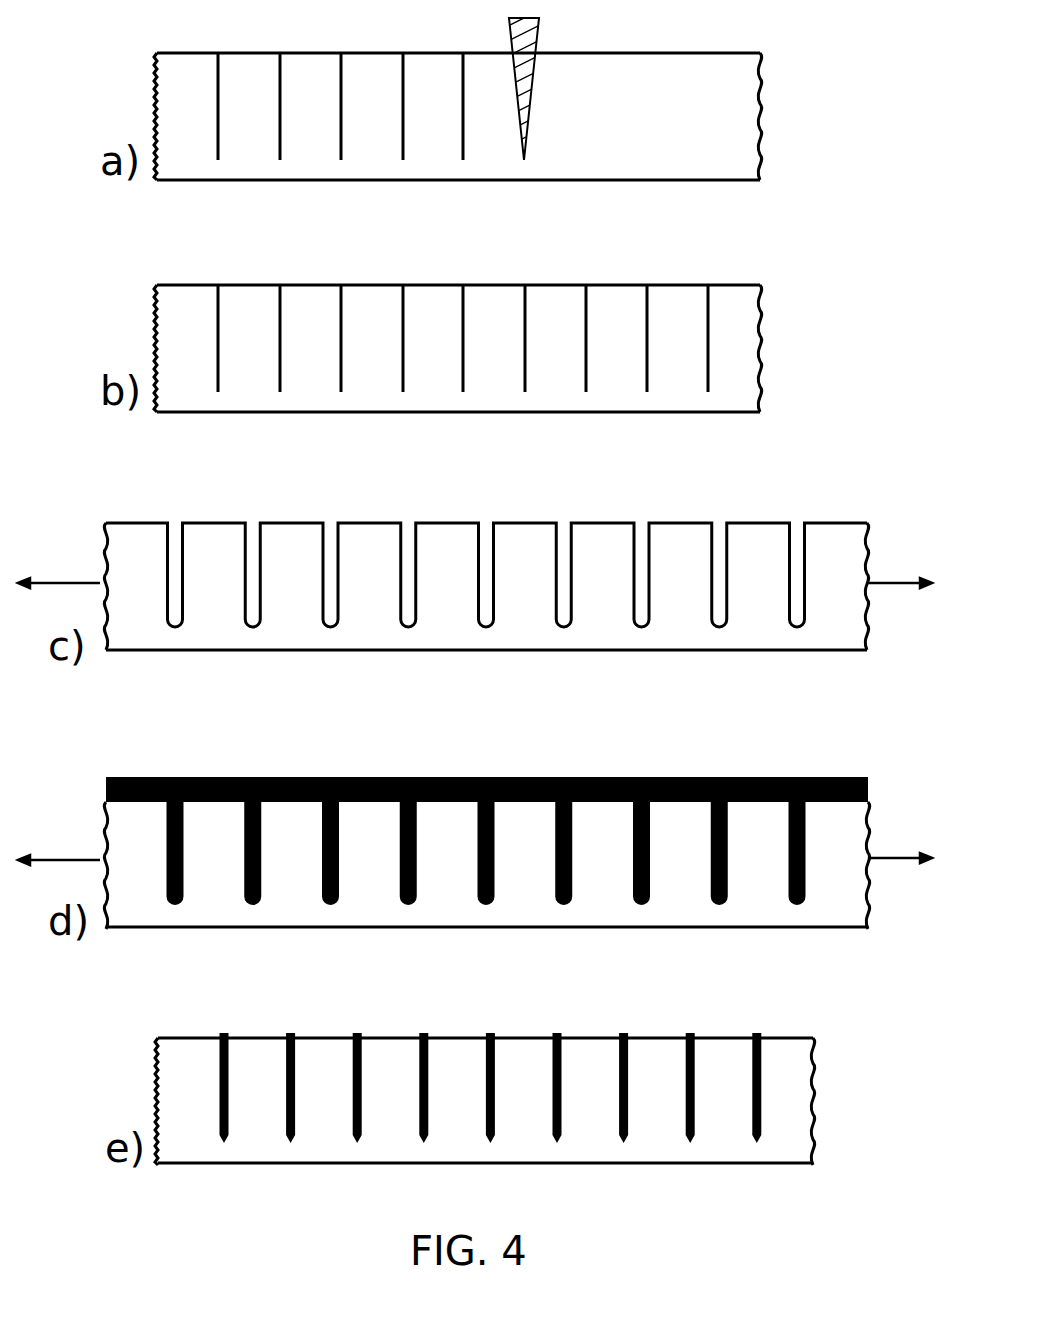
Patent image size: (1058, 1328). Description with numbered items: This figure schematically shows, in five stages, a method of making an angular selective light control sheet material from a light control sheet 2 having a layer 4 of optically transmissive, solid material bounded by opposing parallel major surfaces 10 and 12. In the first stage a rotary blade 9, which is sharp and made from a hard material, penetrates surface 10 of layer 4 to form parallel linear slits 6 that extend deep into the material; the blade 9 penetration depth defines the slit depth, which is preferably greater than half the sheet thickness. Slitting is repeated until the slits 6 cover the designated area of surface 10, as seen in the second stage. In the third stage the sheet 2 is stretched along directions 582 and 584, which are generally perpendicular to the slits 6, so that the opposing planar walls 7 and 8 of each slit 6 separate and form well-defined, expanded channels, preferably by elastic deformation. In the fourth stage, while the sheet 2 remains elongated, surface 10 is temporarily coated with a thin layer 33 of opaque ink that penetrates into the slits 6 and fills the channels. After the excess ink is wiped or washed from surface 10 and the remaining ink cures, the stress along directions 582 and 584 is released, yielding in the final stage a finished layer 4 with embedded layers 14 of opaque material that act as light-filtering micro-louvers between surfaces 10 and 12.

The light control sheet 2 is at (491, 509).
The layer 4 is at (476, 609).
The slit 6 is at (486, 606).
The wall 7 is at (462, 822).
The wall 8 is at (510, 820).
The rotary blade 9 is at (540, 30).
The surface 10 is at (586, 518).
The surface 12 is at (584, 702).
The embedded layer of opaque material 14 is at (426, 1009).
The thin layer of opaque ink 33 is at (106, 780).
The stretching direction 582 is at (59, 699).
The stretching direction 584 is at (902, 693).